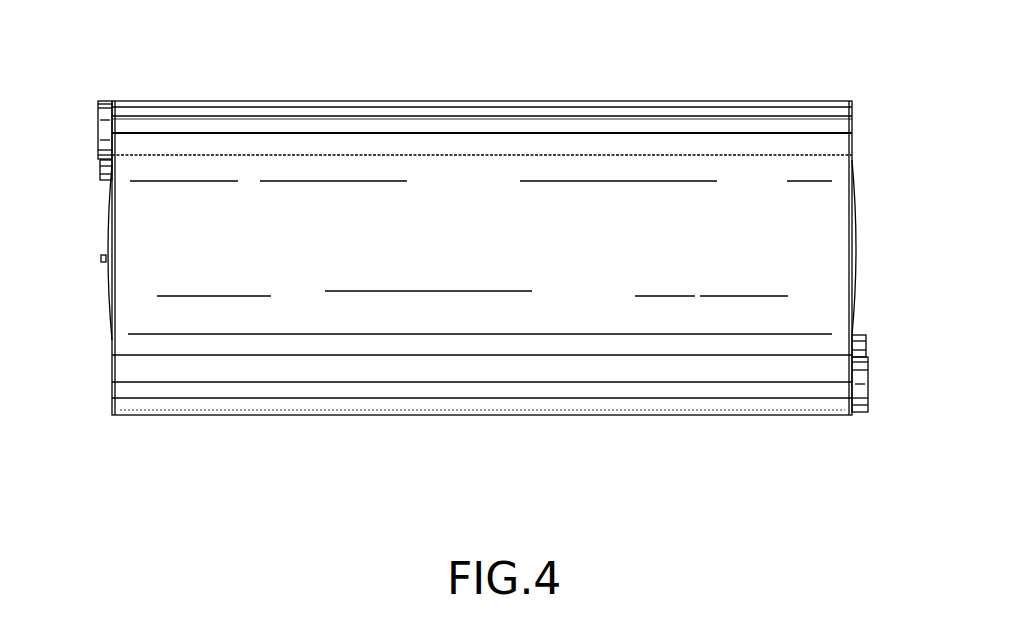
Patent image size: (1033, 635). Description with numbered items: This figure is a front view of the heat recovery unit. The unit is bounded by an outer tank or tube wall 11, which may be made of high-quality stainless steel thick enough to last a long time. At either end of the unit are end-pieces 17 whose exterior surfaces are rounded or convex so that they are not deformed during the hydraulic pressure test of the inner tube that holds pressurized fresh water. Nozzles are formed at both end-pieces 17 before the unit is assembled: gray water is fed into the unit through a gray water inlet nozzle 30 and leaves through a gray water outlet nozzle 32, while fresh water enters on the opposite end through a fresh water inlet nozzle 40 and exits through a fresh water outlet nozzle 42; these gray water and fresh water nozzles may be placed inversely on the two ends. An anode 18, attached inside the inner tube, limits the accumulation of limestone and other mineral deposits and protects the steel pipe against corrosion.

The outer tank or tube wall 11 is at (469, 93).
The gray water inlet nozzle 30 is at (104, 93).
The fresh water outlet nozzle 42 is at (92, 173).
The anode 18 is at (100, 259).
The end-piece 17 is at (867, 255).
The fresh water inlet nozzle 40 is at (870, 340).
The gray water outlet nozzle 32 is at (860, 420).